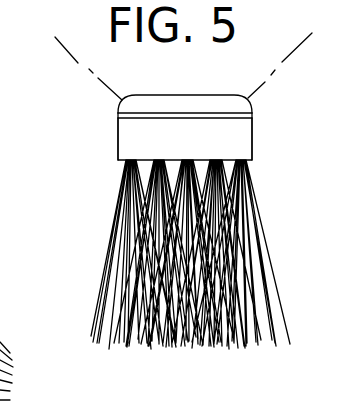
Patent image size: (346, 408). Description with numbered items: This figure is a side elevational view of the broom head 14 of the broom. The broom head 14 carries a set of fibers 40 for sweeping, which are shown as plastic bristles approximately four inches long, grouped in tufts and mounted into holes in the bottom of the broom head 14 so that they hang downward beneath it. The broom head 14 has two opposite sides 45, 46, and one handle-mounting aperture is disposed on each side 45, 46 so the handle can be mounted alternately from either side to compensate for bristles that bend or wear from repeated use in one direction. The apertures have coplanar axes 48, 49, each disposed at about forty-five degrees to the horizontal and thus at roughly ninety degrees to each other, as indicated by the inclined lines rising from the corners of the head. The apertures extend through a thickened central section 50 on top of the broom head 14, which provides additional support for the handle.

The broom head 14 is at (218, 150).
The fibers 40 is at (255, 298).
The side of the broom head 45 is at (254, 133).
The side of the broom head 46 is at (118, 144).
The aperture axis 48 is at (290, 52).
The aperture axis 49 is at (68, 53).
The thickened central section 50 is at (185, 87).